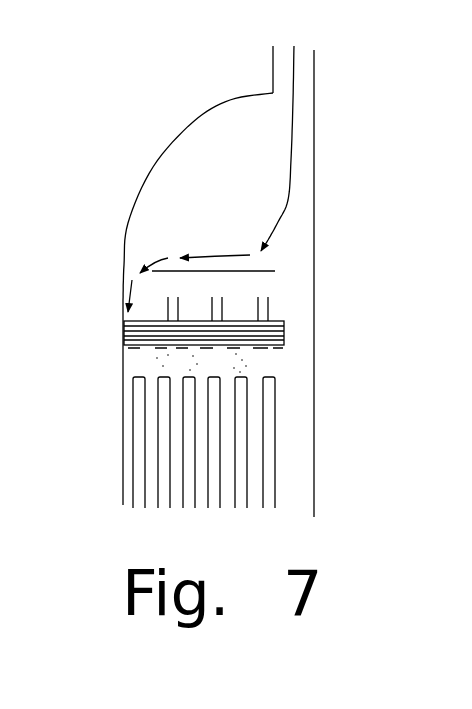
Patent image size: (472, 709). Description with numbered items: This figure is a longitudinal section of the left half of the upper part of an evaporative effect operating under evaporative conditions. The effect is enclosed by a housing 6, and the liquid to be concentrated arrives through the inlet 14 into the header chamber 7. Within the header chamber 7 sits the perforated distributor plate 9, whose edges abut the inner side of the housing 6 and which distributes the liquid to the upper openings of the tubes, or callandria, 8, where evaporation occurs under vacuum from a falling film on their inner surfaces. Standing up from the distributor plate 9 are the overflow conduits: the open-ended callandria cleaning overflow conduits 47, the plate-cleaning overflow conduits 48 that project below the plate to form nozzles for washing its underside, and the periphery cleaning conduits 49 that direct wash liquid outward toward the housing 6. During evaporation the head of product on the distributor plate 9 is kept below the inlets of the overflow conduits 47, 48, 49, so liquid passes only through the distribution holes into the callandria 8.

The housing 6 is at (124, 466).
The header chamber 7 is at (205, 140).
The tubes (callandria) 8 is at (150, 410).
The distributor plate 9 is at (131, 348).
The inlet 14 is at (273, 82).
The callandria cleaning overflow conduits 47 is at (272, 303).
The plate-cleaning overflow conduits 48 is at (275, 271).
The periphery cleaning conduits 49 is at (150, 320).